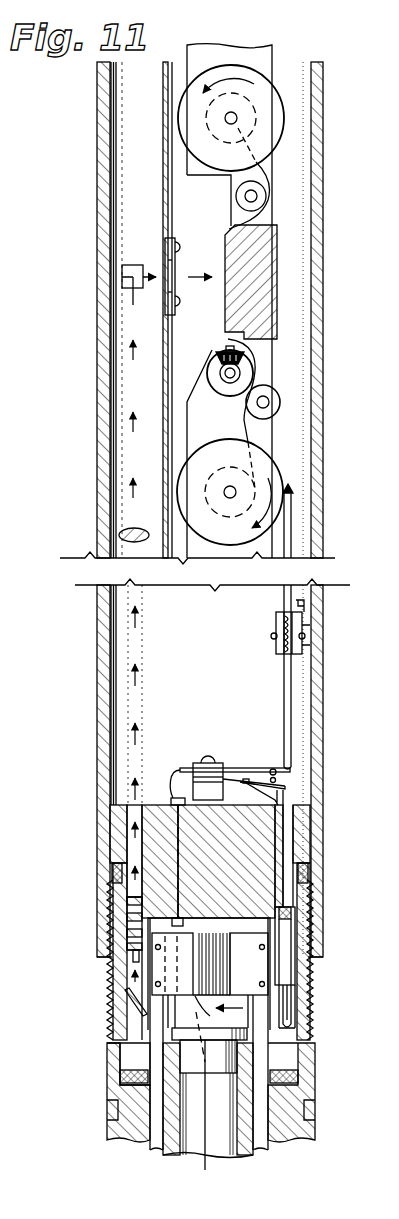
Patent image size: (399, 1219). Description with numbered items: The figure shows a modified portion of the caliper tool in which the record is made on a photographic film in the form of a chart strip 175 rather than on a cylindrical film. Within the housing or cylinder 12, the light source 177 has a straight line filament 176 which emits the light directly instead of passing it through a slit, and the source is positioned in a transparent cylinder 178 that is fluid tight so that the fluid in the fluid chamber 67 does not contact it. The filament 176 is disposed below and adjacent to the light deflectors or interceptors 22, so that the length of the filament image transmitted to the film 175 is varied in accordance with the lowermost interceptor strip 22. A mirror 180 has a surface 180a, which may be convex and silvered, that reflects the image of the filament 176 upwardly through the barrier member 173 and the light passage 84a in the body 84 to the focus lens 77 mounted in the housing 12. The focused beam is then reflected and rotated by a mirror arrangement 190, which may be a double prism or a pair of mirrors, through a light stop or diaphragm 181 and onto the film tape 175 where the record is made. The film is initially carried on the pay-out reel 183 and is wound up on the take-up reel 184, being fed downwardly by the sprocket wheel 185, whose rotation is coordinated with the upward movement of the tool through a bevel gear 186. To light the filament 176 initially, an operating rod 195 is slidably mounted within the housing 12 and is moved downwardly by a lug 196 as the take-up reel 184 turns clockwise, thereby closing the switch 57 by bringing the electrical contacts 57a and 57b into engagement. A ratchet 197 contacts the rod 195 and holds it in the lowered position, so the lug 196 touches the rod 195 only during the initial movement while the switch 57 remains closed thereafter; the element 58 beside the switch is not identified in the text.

The housing or cylinder 12 is at (100, 665).
The light deflectors or interceptors 22 is at (219, 1013).
The switch 57 is at (240, 767).
The electrical contact 57a is at (272, 768).
The electrical contact 57b is at (290, 778).
The valve actuator 58 is at (182, 768).
The fluid chamber 67 is at (228, 926).
The focus lens 77 is at (126, 530).
The body 84 is at (116, 830).
The light passage 84a is at (128, 852).
The barrier member 173 is at (132, 960).
The chart strip (photographic film) 175 is at (225, 228).
The straight line filament 176 is at (289, 1008).
The light bulb or source 177 is at (295, 1027).
The transparent cylinder 178 is at (271, 943).
The mirror 180 is at (125, 1036).
The mirror surface 180a is at (140, 1018).
The light stop or diaphragm (slit) 181 is at (176, 275).
The pay-out reel 183 is at (275, 112).
The take-up reel 184 is at (272, 470).
The sprocket wheel (drive wheel) 185 is at (246, 370).
The bevel gear 186 is at (215, 358).
The mirror arrangement 190 is at (126, 262).
The operating rod 195 is at (292, 680).
The lug 196 is at (291, 490).
The ratchet 197 is at (305, 630).